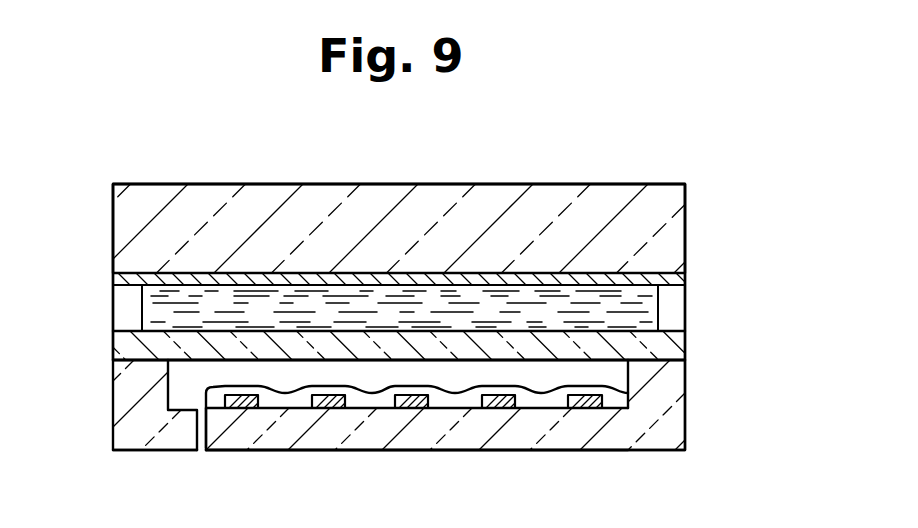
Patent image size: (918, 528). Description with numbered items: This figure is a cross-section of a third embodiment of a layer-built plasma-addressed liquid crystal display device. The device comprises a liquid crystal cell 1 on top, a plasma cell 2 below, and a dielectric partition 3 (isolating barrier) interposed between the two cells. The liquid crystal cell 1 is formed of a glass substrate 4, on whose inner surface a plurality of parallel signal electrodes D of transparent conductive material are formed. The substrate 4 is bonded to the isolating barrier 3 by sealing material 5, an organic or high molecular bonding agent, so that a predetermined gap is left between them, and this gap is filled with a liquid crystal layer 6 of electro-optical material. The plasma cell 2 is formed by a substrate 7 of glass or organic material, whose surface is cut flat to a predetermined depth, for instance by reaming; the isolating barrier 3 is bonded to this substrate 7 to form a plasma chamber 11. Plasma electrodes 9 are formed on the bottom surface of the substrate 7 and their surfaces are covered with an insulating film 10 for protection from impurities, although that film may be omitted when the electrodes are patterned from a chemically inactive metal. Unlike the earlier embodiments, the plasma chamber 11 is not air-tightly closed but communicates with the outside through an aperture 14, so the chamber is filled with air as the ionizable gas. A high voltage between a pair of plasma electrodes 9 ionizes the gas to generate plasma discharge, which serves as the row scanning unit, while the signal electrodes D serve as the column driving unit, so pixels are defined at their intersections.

The liquid crystal cell 1 is at (98, 183).
The plasma cell 2 is at (98, 352).
The dielectric partition 3 is at (677, 343).
The glass substrate 4 is at (685, 216).
The sealing material 5 is at (687, 317).
The liquid crystal layer 6 is at (655, 313).
The substrate 7 is at (685, 433).
The plasma electrodes 9 is at (577, 480).
The insulating film 10 is at (615, 402).
The plasma chamber 11 is at (617, 375).
The aperture 14 is at (203, 448).
The signal electrodes D is at (685, 278).